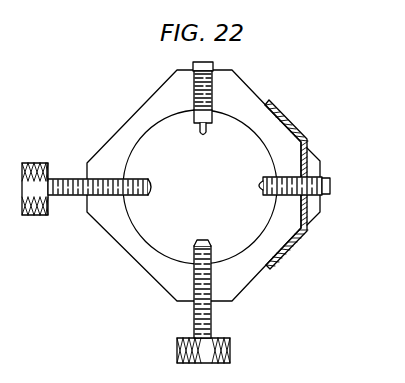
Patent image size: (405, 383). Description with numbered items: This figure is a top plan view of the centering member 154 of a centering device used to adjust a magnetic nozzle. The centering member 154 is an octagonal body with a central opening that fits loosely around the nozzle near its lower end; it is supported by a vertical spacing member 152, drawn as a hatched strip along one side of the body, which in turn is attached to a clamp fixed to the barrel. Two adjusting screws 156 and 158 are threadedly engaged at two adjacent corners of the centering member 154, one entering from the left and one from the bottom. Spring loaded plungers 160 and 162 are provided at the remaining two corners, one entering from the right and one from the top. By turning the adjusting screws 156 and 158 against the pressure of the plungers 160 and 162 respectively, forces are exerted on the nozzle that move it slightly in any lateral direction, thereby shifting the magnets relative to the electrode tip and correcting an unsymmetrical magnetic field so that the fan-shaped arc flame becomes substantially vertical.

The vertical spacing member 152 is at (287, 118).
The centering member 154 is at (133, 264).
The adjusting screw 156 is at (41, 163).
The adjusting screw 158 is at (212, 318).
The spring loaded plunger 160 is at (257, 187).
The spring loaded plunger 162 is at (205, 136).